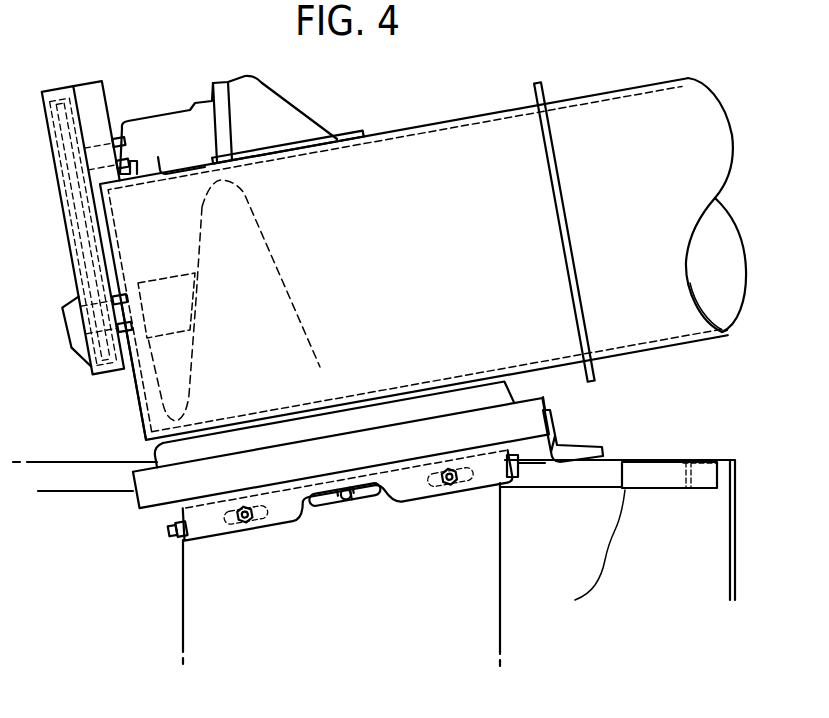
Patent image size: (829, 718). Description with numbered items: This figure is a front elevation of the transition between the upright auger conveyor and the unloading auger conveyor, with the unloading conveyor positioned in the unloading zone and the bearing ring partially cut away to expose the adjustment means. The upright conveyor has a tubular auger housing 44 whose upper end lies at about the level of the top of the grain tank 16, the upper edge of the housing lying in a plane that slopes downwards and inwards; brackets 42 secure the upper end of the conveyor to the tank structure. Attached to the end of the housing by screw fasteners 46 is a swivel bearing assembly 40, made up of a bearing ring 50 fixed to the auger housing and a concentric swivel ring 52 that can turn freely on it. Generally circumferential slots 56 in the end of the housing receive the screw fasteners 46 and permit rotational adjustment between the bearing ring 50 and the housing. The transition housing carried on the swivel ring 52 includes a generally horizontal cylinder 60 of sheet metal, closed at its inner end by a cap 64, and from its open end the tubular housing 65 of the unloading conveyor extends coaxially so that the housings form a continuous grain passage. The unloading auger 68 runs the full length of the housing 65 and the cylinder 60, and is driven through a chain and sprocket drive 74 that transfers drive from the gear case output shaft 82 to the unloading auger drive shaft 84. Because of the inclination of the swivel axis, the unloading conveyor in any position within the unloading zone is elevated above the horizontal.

The grain tank 16 is at (38, 454).
The swivel bearing assembly 40 is at (131, 499).
The brackets 42 is at (575, 478).
The tubular auger housing 44 is at (502, 577).
The screw fasteners 46 is at (165, 532).
The bearing ring 50 is at (480, 483).
The swivel ring 52 is at (518, 385).
The circumferential slots 56 is at (371, 497).
The horizontal cylinder 60 is at (415, 136).
The cap 64 is at (137, 402).
The tubular housing 65 is at (632, 96).
The unloading auger 68 is at (273, 248).
The chain and sprocket drive 74 is at (56, 236).
The gear case output shaft 82 is at (119, 141).
The unloading auger drive shaft 84 is at (125, 297).